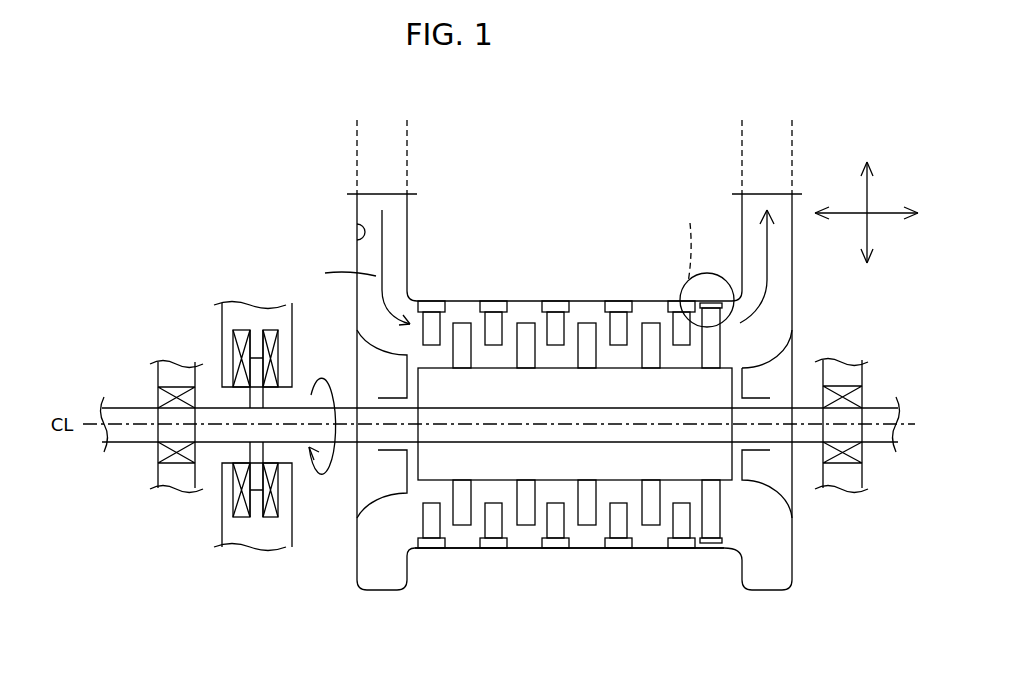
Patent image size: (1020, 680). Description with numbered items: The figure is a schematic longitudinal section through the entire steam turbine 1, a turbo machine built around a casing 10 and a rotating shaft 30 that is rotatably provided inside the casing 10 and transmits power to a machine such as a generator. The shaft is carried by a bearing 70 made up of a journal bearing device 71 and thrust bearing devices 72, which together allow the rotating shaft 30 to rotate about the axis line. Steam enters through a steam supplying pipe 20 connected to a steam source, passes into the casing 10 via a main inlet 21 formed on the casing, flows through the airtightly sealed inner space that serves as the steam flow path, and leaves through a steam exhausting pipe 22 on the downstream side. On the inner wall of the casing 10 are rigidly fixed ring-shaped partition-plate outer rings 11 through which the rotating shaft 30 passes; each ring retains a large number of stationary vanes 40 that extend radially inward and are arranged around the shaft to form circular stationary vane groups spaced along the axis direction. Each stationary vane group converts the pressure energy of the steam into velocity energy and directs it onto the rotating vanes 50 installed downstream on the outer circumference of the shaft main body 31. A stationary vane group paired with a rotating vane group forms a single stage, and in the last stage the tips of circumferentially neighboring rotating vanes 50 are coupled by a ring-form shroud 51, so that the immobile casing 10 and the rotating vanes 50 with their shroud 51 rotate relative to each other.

The steam turbine 1 is at (763, 601).
The casing 10 is at (374, 590).
The partition-plate outer ring 11 is at (672, 300).
The steam supplying pipe 20 is at (352, 150).
The main inlet 21 is at (357, 233).
The steam exhausting pipe 22 is at (740, 150).
The rotating shaft 30 is at (120, 408).
The shaft main body 31 is at (550, 462).
The stationary vane 40 is at (446, 304).
The rotating vane 50 is at (523, 323).
The shroud 51 is at (714, 303).
The bearing 70 is at (203, 238).
The journal bearing device 71 is at (168, 491).
The thrust bearing device 72 is at (245, 551).